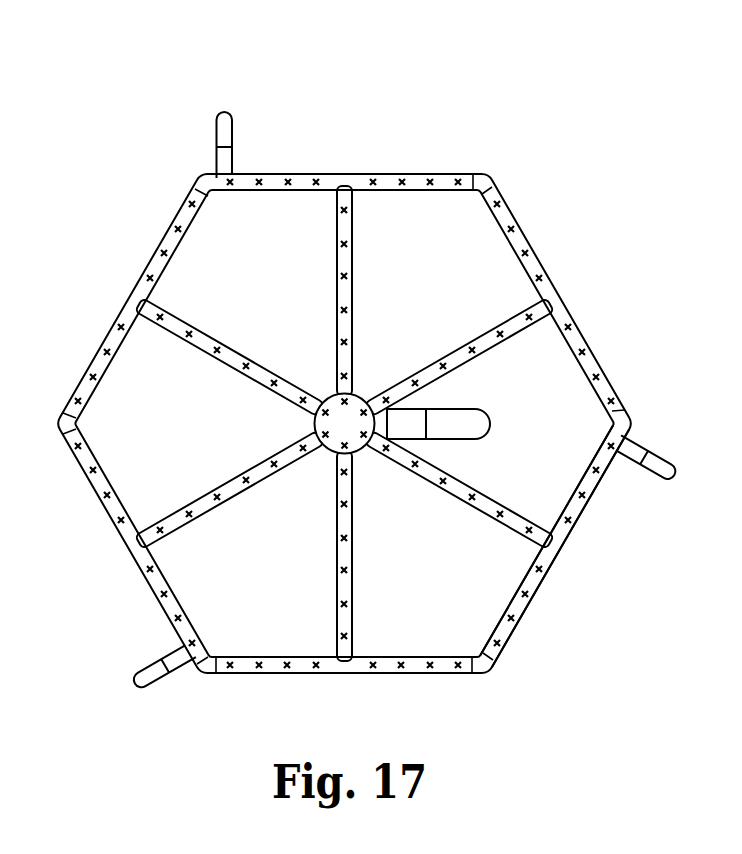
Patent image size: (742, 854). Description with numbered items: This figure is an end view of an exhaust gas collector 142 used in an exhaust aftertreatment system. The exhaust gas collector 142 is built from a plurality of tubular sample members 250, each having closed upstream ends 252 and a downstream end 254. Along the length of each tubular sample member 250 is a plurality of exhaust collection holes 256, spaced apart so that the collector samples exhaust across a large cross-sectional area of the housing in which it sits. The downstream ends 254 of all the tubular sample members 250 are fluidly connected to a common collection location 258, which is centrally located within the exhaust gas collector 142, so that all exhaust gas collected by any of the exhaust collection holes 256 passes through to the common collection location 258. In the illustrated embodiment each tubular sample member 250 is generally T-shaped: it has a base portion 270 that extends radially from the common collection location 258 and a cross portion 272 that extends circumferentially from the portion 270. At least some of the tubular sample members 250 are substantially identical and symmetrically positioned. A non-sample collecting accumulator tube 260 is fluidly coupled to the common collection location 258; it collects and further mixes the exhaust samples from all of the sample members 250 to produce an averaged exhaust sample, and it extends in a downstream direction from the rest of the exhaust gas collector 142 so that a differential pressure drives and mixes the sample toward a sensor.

The exhaust gas collector 142 is at (413, 127).
The tubular sample member 250 is at (372, 392).
The closed upstream end 252 is at (627, 424).
The downstream end 254 is at (370, 445).
The exhaust collection hole 256 is at (470, 494).
The common collection location 258 is at (360, 398).
The non-sample collecting accumulator tube 260 is at (450, 401).
The radially extending portion 270 is at (478, 513).
The circumferentially extending portion 272 is at (533, 597).